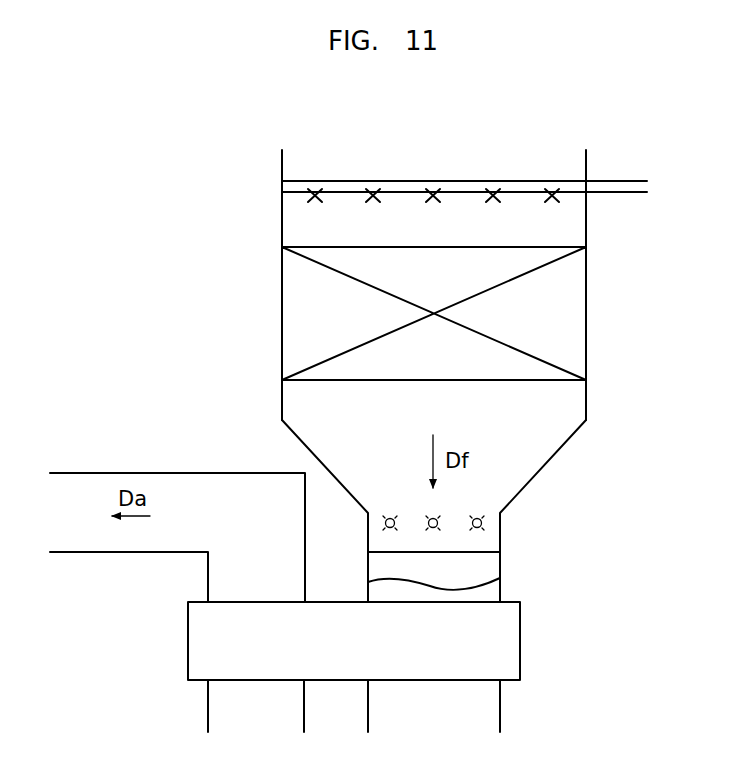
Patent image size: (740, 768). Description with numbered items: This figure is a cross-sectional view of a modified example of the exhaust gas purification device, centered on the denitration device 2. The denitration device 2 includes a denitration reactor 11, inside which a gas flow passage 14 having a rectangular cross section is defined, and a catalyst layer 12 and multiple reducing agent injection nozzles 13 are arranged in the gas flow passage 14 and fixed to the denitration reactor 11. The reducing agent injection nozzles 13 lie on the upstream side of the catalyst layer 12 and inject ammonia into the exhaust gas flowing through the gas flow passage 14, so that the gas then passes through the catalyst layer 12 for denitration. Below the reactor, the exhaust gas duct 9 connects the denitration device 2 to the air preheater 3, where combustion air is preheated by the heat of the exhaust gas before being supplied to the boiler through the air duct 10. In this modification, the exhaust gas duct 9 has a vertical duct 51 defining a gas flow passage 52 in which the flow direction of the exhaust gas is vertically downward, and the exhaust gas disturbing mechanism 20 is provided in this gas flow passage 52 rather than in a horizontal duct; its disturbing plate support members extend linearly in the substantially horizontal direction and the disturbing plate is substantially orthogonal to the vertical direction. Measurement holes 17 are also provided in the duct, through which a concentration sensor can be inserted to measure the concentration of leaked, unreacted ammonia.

The denitration device 2 is at (243, 183).
The air preheater 3 is at (508, 600).
The exhaust gas duct 9 is at (506, 522).
The air duct 10 is at (135, 553).
The denitration reactor 11 is at (282, 212).
The catalyst layer 12 is at (292, 308).
The reducing agent injection nozzles 13 is at (368, 196).
The gas flow passage 14 is at (426, 241).
The measurement holes 17 is at (386, 519).
The exhaust gas disturbing mechanism 20 is at (486, 550).
The vertical duct 51 is at (504, 563).
The gas flow passage 52 is at (463, 580).